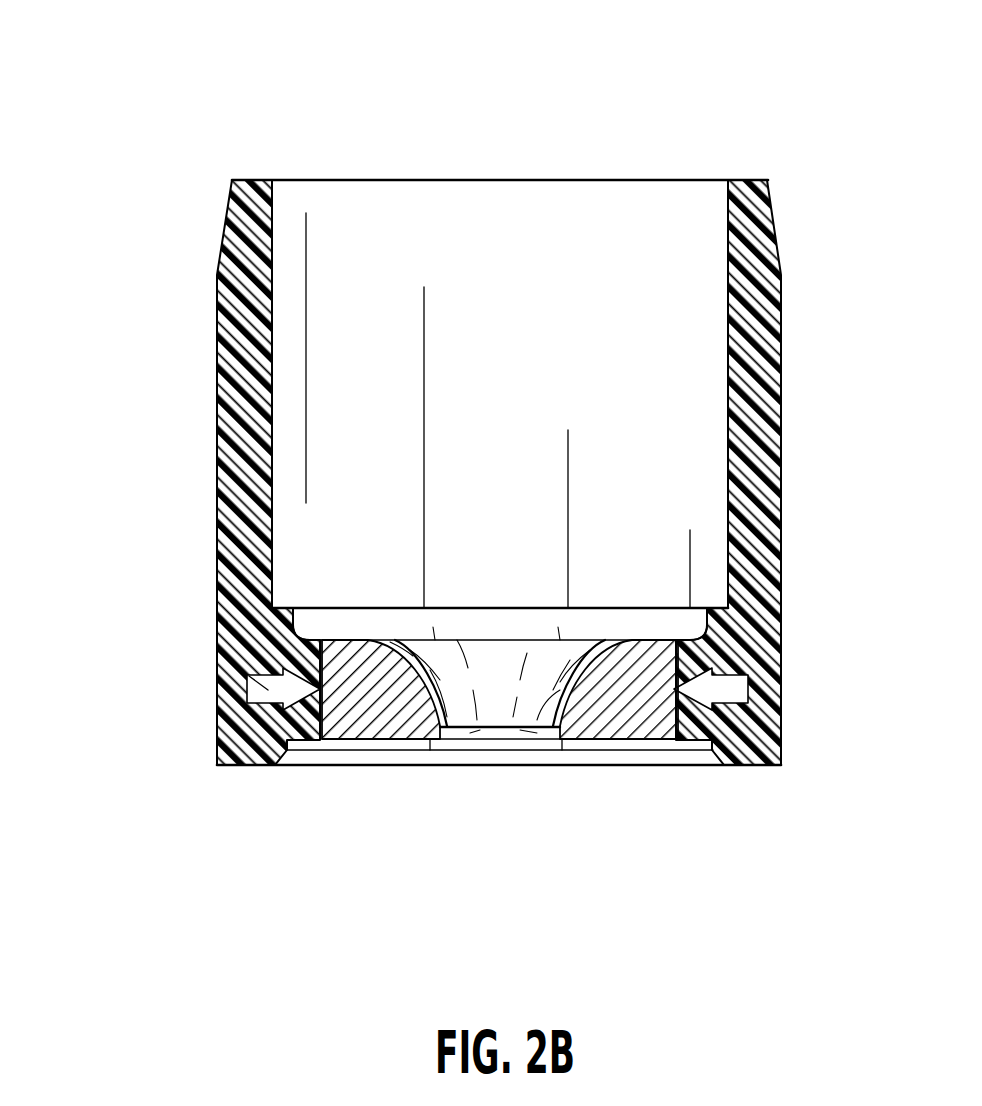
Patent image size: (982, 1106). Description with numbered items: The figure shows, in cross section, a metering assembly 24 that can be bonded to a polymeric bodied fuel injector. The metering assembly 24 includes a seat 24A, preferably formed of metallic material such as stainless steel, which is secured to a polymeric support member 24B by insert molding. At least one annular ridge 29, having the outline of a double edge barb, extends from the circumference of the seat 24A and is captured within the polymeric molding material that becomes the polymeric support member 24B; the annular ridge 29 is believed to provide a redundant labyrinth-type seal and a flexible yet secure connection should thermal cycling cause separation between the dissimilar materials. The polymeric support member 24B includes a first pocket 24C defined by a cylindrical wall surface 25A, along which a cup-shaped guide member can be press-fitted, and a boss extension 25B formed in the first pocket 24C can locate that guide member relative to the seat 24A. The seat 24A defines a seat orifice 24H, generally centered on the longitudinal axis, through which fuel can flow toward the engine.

The metering assembly 24 is at (256, 792).
The seat 24A is at (612, 717).
The polymeric support member 24B is at (218, 288).
The first pocket 24C is at (617, 219).
The seat orifice 24H is at (490, 712).
The cylindrical wall surface 25A is at (272, 250).
The boss extension 25B is at (292, 608).
The annular ridge 29 is at (252, 674).